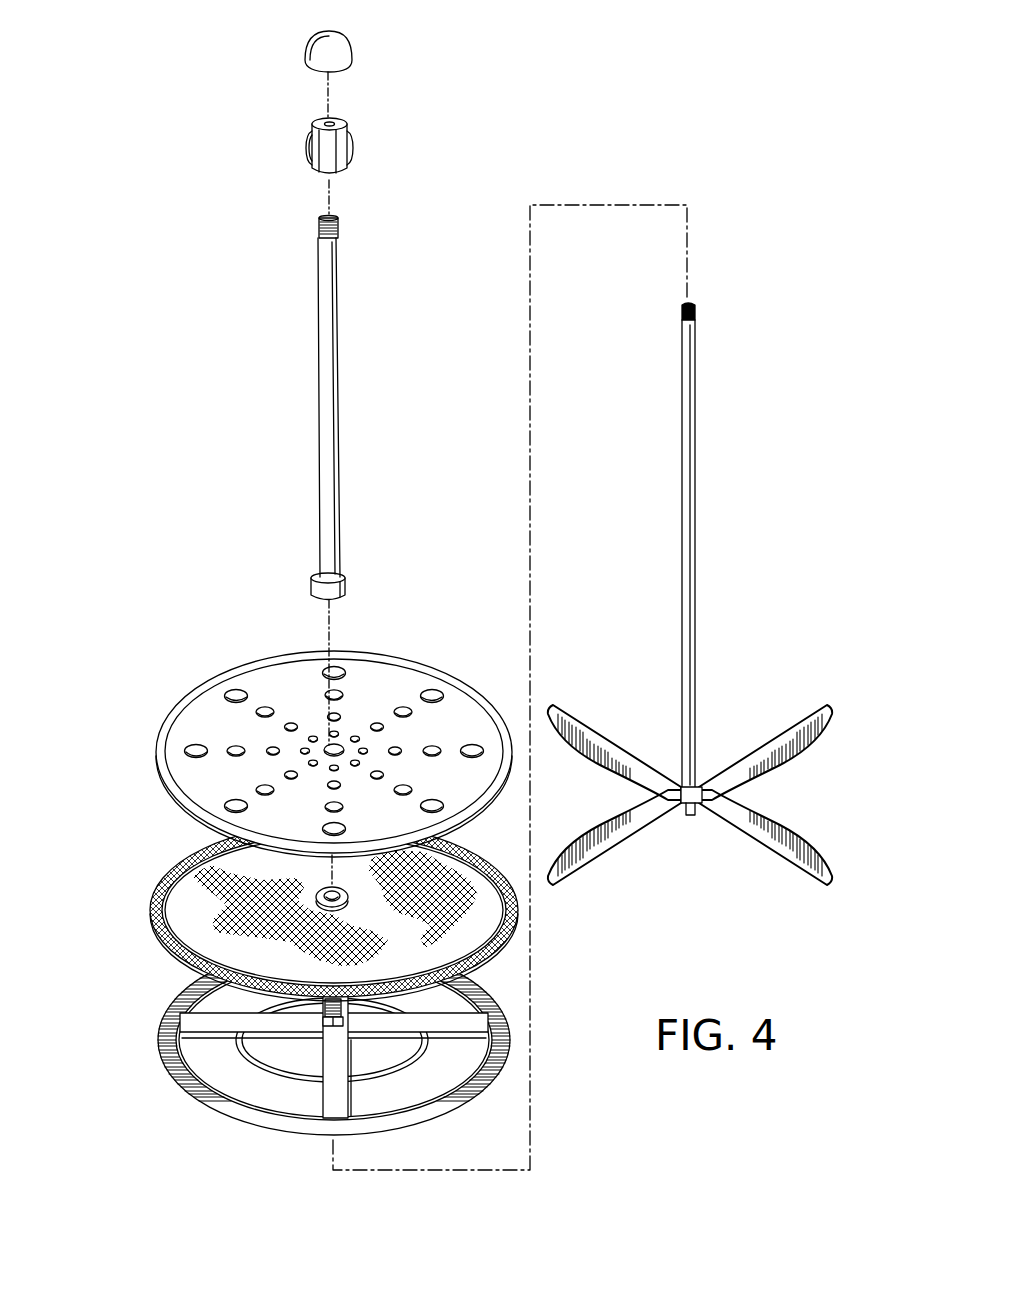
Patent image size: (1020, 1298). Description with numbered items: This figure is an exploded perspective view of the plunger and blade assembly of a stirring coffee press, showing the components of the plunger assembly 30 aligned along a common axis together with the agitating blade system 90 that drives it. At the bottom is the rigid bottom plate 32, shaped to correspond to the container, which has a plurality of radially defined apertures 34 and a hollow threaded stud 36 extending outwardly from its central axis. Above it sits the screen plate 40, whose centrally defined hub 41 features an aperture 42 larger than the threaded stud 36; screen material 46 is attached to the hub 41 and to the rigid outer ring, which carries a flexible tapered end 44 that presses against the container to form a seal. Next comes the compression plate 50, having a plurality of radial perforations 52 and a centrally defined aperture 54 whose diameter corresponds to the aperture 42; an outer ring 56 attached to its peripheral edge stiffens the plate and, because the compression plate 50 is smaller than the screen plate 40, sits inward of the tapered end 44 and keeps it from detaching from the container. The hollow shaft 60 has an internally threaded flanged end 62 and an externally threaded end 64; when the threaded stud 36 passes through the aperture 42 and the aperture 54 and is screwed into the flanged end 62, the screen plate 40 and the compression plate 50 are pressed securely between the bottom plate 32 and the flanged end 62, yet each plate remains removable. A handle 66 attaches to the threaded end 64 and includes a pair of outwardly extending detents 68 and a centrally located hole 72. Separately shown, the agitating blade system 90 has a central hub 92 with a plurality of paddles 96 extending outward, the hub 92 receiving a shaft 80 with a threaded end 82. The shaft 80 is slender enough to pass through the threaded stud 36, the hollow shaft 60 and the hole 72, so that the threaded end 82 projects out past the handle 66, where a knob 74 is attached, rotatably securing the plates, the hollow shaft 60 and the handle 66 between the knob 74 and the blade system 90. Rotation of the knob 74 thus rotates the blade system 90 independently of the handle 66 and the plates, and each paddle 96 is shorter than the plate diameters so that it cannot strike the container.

The plunger assembly 30 is at (200, 427).
The bottom plate 32 is at (160, 1005).
The apertures 34 is at (280, 1038).
The hollow threaded stud 36 is at (328, 1020).
The screen plate 40 is at (165, 940).
The hub 41 is at (345, 904).
The aperture 42 is at (348, 894).
The tapered end 44 is at (160, 890).
The screen material 46 is at (215, 870).
The compression plate 50 is at (285, 685).
The perforations 52 is at (468, 745).
The aperture 54 is at (337, 745).
The outer ring 56 is at (168, 725).
The hollow shaft 60 is at (340, 405).
The flanged end 62 is at (348, 590).
The threaded end 64 is at (318, 230).
The handle 66 is at (345, 172).
The detents 68 is at (355, 145).
The hole 72 is at (322, 122).
The knob 74 is at (352, 40).
The shaft 80 is at (698, 490).
The threaded end 82 is at (696, 308).
The agitating blade system 90 is at (711, 800).
The hub 92 is at (706, 790).
The paddles 96 is at (563, 743).